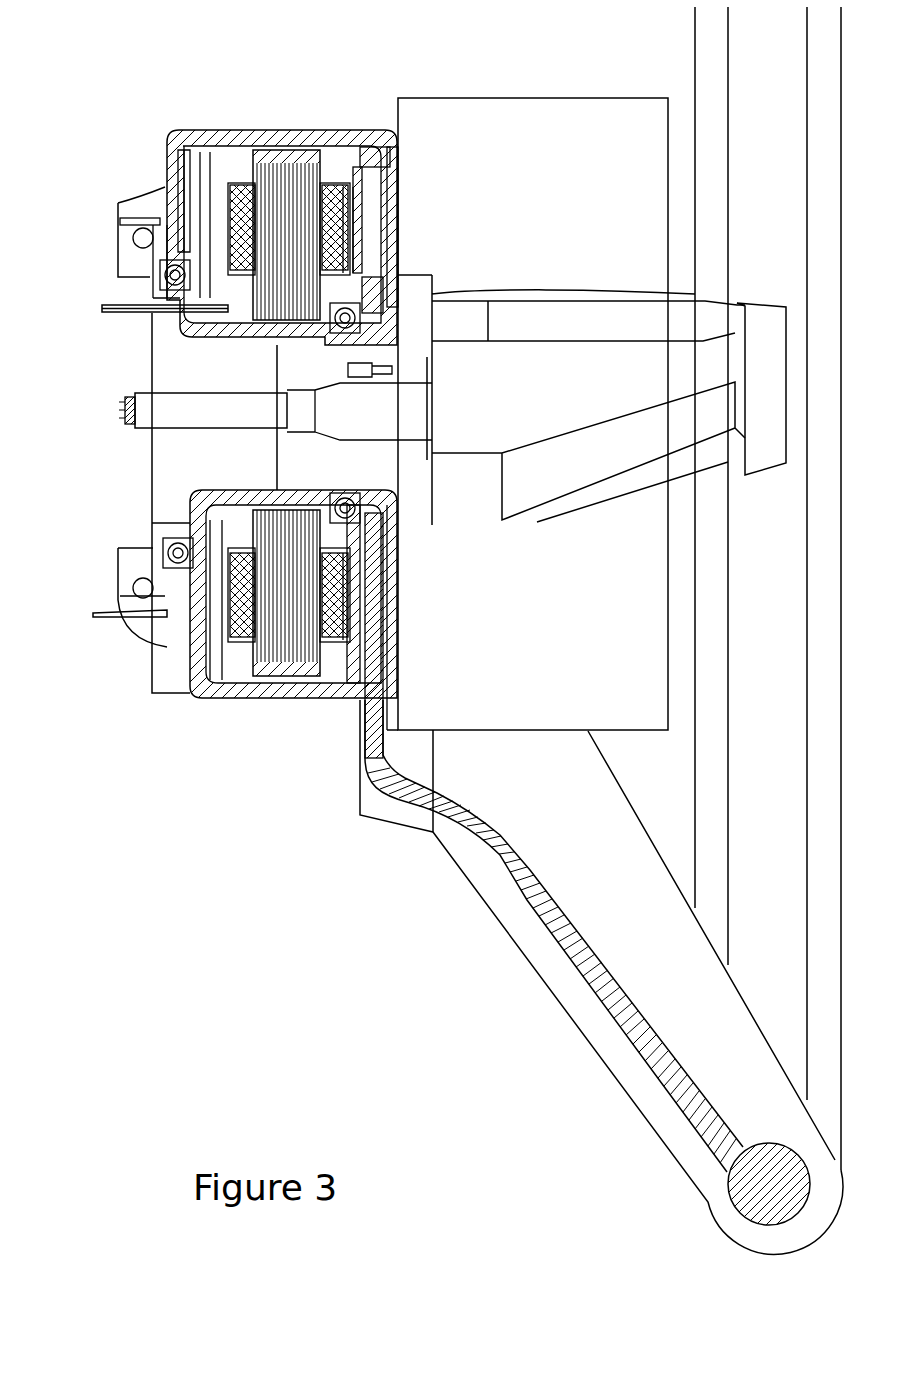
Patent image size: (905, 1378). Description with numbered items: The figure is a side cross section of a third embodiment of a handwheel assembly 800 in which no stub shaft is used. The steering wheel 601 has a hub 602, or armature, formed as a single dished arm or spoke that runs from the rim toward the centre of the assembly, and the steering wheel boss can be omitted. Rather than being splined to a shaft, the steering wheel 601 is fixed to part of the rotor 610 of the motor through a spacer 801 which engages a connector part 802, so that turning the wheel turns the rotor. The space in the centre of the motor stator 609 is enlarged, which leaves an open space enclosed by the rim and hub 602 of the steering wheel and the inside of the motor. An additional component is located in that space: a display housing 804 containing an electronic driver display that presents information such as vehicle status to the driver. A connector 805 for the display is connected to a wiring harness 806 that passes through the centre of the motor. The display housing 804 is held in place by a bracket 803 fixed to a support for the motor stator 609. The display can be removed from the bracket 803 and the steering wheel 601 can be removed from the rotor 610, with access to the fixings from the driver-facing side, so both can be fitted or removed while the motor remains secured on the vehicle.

The steering wheel 601 is at (730, 1237).
The hub 602 is at (602, 1067).
The motor stator 609 is at (198, 323).
The rotor 610 is at (262, 148).
The handwheel assembly 800 is at (407, 905).
The spacer 801 is at (402, 233).
The connector part 802 is at (317, 146).
The bracket 803 is at (418, 233).
The display housing 804 is at (552, 97).
The connector 805 is at (122, 420).
The wiring harness 806 is at (190, 430).